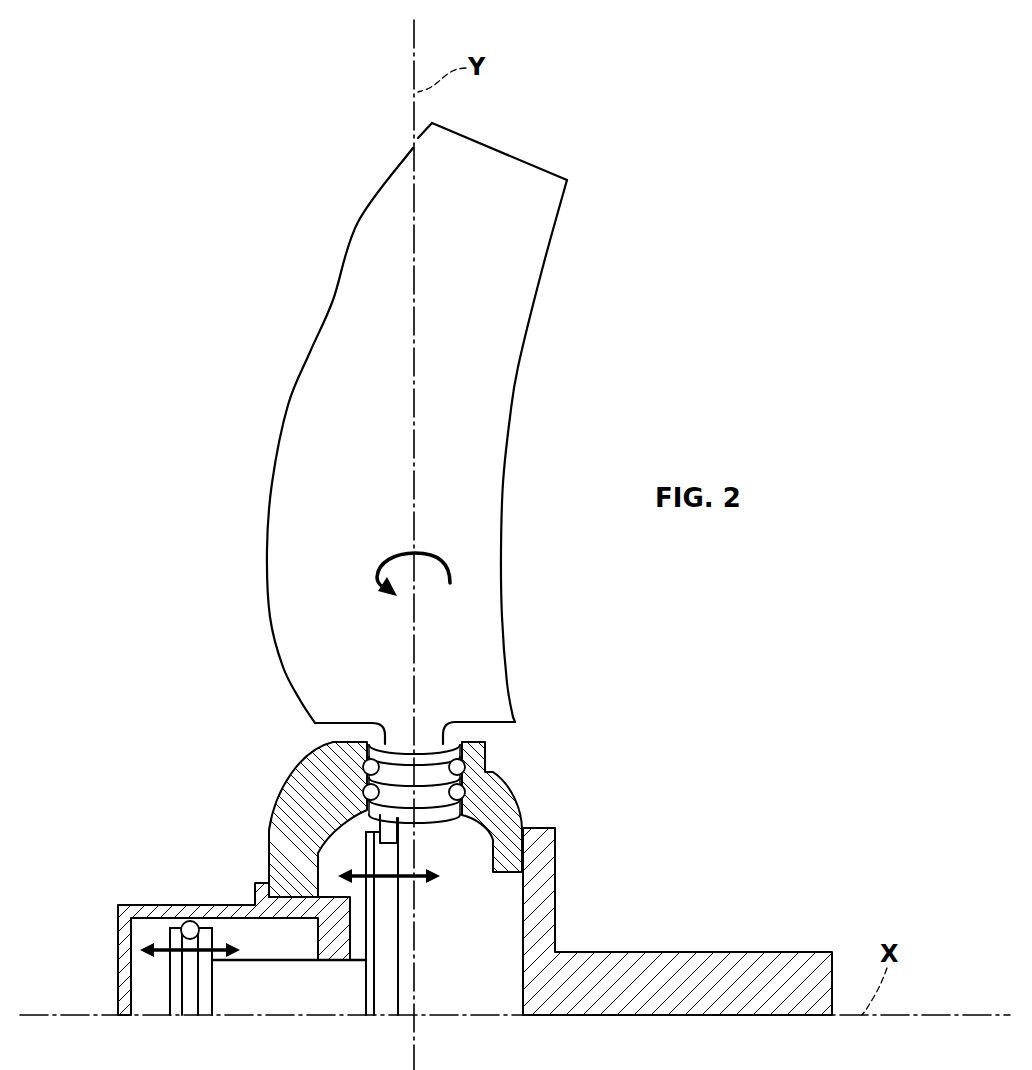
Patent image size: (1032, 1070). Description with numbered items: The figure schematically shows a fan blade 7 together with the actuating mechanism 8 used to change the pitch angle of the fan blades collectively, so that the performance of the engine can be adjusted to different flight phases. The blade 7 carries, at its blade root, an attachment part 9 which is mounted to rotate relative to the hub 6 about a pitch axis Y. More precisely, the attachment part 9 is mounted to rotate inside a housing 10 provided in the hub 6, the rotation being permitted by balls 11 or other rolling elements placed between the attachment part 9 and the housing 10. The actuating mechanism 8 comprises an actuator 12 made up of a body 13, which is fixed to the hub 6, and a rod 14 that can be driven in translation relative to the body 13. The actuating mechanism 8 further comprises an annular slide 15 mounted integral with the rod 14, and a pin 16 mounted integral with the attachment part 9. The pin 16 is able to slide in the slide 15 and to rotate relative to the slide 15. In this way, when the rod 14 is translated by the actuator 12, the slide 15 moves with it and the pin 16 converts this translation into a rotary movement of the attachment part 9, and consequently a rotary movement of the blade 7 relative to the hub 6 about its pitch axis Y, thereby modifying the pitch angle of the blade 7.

The hub 6 is at (305, 813).
The blade 7 is at (452, 450).
The actuating mechanism 8 is at (445, 894).
The attachment part 9 is at (425, 805).
The housing 10 is at (462, 818).
The balls 11 is at (462, 792).
The actuator 12 is at (120, 962).
The body 13 is at (190, 925).
The rod 14 is at (292, 1000).
The annular slide 15 is at (388, 1000).
The pin 16 is at (383, 833).